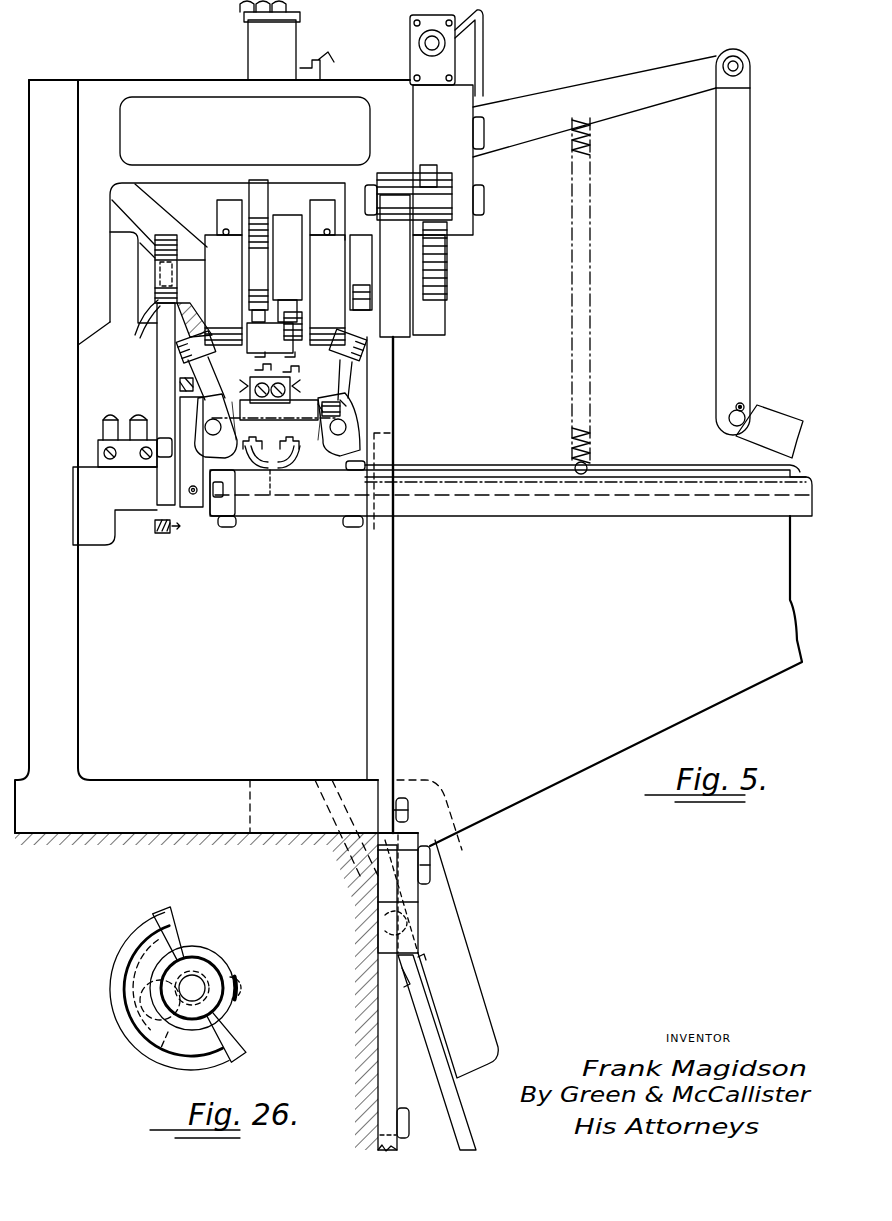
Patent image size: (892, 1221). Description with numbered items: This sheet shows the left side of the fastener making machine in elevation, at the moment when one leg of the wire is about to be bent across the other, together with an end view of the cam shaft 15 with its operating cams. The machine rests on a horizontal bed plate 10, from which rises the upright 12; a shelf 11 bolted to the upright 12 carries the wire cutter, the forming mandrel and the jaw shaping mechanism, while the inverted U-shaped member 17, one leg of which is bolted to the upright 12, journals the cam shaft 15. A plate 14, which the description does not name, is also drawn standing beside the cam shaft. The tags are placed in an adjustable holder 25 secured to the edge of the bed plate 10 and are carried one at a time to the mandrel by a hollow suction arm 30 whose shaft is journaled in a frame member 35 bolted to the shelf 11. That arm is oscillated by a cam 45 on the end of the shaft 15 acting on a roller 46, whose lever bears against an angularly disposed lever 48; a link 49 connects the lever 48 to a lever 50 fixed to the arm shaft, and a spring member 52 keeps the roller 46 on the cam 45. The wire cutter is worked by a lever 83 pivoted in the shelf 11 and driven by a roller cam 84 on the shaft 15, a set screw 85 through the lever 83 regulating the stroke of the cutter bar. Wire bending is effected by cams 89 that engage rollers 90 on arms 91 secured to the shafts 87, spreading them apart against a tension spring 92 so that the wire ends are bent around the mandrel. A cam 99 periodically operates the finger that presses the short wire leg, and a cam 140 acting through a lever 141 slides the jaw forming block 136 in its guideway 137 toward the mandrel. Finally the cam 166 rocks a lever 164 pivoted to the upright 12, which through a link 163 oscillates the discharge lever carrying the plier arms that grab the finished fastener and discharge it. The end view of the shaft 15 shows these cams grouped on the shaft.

In FIG. 5, the bed plate 10 is at (181, 809).
In FIG. 5, the shelf 11 is at (124, 496).
In FIG. 5, the upright 12 is at (66, 589).
In FIG. 5, the vertical plate 14 is at (388, 392).
In FIG. 5, the cam shaft 15 is at (192, 262).
In FIG. 5, the inverted U-shaped member 17 is at (111, 134).
In FIG. 5, the tag holder 25 is at (504, 1102).
In FIG. 5, the suction arm 30 is at (798, 500).
In FIG. 5, the frame member 35 is at (790, 465).
In FIG. 5, the cam 45 is at (432, 265).
In FIG. 5, the roller 46 is at (456, 183).
In FIG. 5, the lever 48 is at (628, 78).
In FIG. 5, the link 49 is at (748, 252).
In FIG. 5, the lever 50 is at (777, 422).
In FIG. 26, the lever 50 is at (202, 946).
In FIG. 5, the spring member 52 is at (590, 326).
In FIG. 5, the lever 83 is at (157, 350).
In FIG. 5, the roller cam 84 is at (164, 245).
In FIG. 26, the roller cam 84 is at (248, 990).
In FIG. 5, the set screw 85 is at (165, 458).
In FIG. 5, the shafts 87 is at (277, 380).
In FIG. 5, the cams 89 is at (238, 312).
In FIG. 26, the cams 89 is at (140, 936).
In FIG. 5, the rollers 90 is at (414, 448).
In FIG. 5, the arms 91 is at (182, 352).
In FIG. 5, the tension spring 92 is at (280, 412).
In FIG. 5, the cam 99 is at (361, 246).
In FIG. 26, the cam 99 is at (226, 1014).
In FIG. 5, the block 136 is at (232, 376).
In FIG. 5, the guideway 137 is at (232, 404).
In FIG. 5, the cam 140 is at (332, 362).
In FIG. 26, the cam 140 is at (164, 1050).
In FIG. 5, the lever 141 is at (290, 200).
In FIG. 5, the link 163 is at (240, 12).
In FIG. 5, the lever 164 is at (248, 70).
In FIG. 5, the cam 166 is at (258, 225).
In FIG. 26, the cam 166 is at (185, 938).